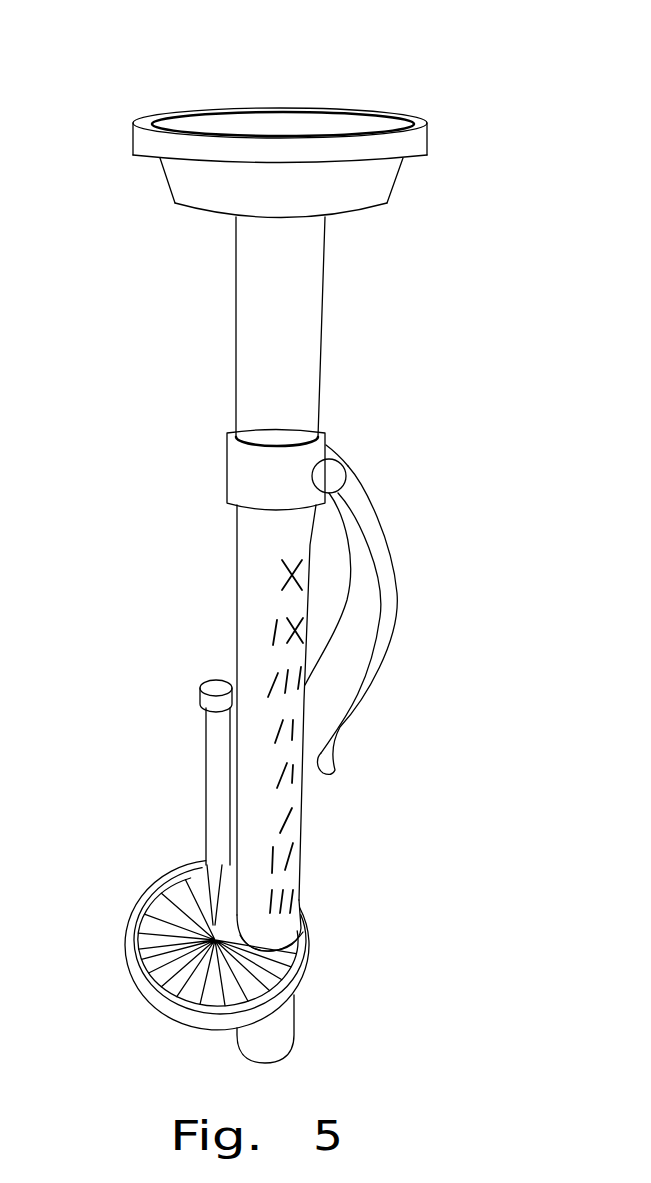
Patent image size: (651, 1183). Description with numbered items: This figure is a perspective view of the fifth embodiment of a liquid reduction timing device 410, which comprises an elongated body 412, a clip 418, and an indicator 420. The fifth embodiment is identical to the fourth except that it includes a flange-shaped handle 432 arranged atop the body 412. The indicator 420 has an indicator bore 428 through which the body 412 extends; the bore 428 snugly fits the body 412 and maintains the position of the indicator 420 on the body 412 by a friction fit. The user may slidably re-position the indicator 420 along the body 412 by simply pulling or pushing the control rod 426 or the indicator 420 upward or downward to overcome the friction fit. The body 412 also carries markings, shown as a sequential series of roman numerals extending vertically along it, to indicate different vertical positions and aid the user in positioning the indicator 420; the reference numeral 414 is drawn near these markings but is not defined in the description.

The liquid reduction timing device 410 is at (140, 110).
The flange-shaped handle 432 is at (427, 130).
The elongated body 412 is at (314, 308).
The clip 418 is at (375, 520).
The lower shaft with indicia 414 is at (268, 685).
The control rod 426 is at (206, 778).
The indicator bore 428 is at (302, 913).
The indicator 420 is at (128, 962).